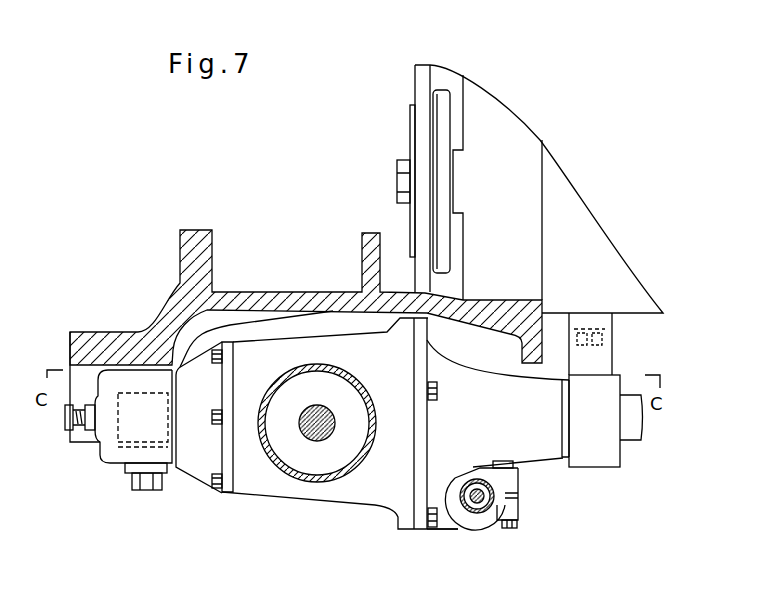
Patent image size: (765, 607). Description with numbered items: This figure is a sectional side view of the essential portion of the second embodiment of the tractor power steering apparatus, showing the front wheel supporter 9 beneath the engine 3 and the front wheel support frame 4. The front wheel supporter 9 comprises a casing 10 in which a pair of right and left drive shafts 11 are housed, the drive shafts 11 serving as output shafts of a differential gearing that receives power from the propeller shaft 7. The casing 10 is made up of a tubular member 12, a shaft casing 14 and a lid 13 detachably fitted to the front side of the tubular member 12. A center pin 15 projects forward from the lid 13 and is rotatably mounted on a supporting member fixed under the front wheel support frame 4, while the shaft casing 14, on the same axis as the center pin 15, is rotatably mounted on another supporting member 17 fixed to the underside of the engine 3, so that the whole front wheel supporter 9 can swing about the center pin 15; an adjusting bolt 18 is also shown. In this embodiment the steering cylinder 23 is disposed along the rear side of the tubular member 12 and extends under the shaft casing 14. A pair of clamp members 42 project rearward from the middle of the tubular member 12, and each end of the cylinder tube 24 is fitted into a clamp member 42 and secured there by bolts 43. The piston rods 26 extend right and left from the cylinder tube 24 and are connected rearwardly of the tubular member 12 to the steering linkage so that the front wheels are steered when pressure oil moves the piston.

The engine 3 is at (587, 243).
The front wheel support frame 4 is at (202, 264).
The propeller shaft 7 is at (636, 440).
The front wheel supporter 9 is at (255, 501).
The casing 10 is at (302, 504).
The drive shaft 11 is at (333, 413).
The tubular member 12 is at (382, 498).
The lid 13 is at (201, 453).
The shaft casing 14 is at (550, 445).
The center pin 15 is at (130, 448).
The supporting member 17 is at (600, 458).
The adjusting bolt 18 is at (64, 418).
The steering cylinder 23 is at (478, 524).
The cylinder tube 24 is at (491, 526).
The piston rod 26 is at (484, 498).
The clamp member 42 is at (455, 530).
The bolt 43 is at (513, 528).